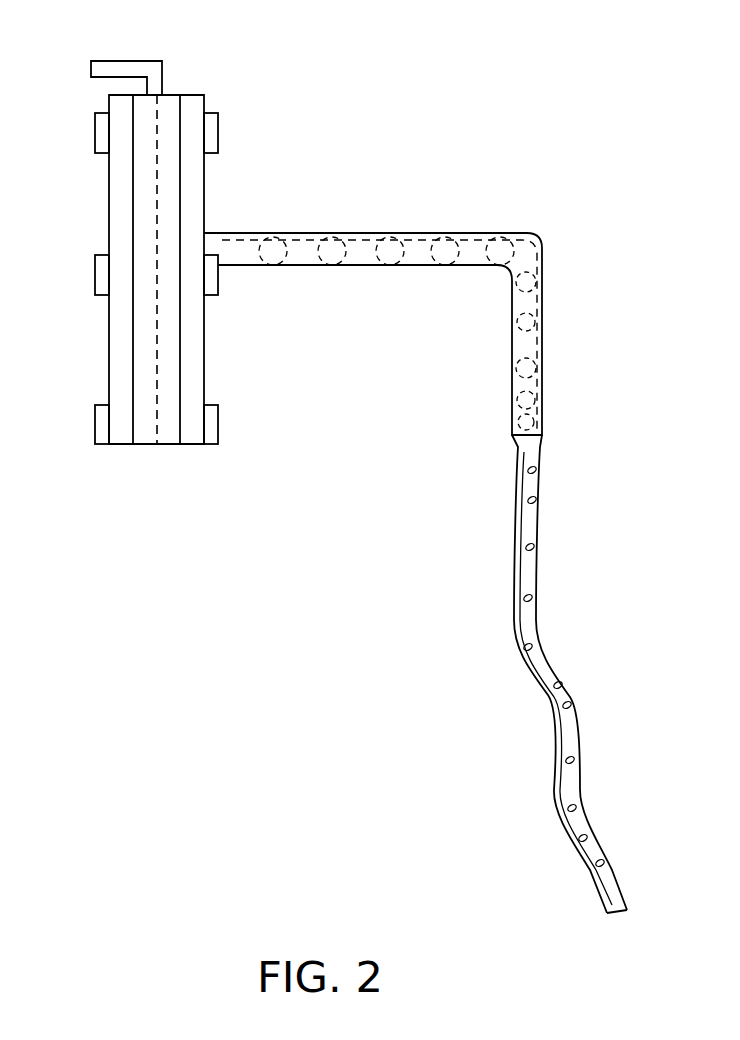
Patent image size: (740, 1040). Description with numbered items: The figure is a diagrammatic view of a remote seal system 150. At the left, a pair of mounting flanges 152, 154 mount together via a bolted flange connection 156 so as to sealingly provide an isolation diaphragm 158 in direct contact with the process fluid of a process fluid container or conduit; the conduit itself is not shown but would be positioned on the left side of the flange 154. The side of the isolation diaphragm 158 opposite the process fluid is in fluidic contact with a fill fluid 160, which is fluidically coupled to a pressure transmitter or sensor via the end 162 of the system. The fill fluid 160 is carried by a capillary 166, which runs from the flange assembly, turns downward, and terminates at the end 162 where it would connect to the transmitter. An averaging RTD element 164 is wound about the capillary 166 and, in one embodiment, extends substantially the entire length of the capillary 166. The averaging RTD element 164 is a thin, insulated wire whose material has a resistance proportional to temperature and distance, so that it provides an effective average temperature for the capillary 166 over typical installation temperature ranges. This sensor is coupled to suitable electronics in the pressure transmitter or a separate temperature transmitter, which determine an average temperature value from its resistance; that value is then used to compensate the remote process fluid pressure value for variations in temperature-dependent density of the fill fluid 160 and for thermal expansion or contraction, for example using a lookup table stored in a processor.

The remote seal system 150 is at (347, 504).
The mounting flange 152 is at (193, 444).
The mounting flange 154 is at (123, 447).
The bolted flange connection 156 is at (218, 132).
The isolation diaphragm 158 is at (157, 212).
The fill fluid 160 is at (268, 248).
The end 162 is at (625, 913).
The averaging RTD element 164 is at (470, 242).
The capillary 166 is at (542, 323).